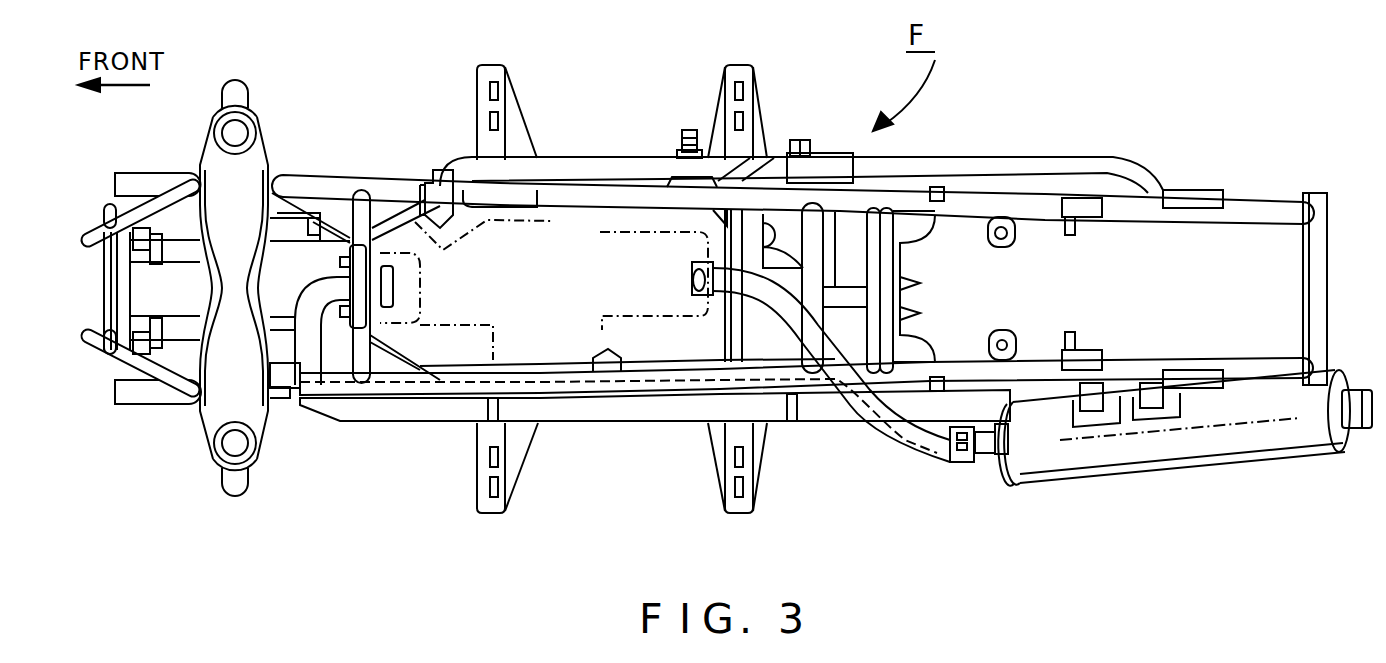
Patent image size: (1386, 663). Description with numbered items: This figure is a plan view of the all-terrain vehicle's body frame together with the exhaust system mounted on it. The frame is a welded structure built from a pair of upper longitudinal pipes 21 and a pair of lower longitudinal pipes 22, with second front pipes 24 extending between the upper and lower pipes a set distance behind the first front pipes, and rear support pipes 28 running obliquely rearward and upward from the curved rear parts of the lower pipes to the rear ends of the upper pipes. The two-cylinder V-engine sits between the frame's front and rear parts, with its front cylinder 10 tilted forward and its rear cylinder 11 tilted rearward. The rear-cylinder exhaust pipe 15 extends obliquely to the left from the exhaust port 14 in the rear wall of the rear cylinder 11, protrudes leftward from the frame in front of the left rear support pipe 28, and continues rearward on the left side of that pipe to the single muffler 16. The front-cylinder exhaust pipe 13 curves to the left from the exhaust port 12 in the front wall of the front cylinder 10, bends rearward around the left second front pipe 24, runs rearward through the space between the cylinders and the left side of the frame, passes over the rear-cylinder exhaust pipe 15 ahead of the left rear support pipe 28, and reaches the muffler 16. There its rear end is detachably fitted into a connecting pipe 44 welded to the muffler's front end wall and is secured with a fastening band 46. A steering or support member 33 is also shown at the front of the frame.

The front cylinder 10 is at (425, 262).
The rear cylinder 11 is at (657, 228).
The exhaust port 12 is at (400, 292).
The front-cylinder exhaust pipe 13 is at (315, 357).
The exhaust port 14 is at (690, 278).
The rear-cylinder exhaust pipe 15 is at (766, 290).
The muffler 16 is at (1220, 452).
The upper longitudinal pipes 21 is at (322, 185).
The lower longitudinal pipes 22 is at (620, 410).
The second front pipes 24 is at (333, 372).
The rear support pipes 28 is at (955, 392).
The steering stem assembly 33 is at (218, 400).
The connecting pipe 44 is at (987, 447).
The fastening band 46 is at (962, 458).